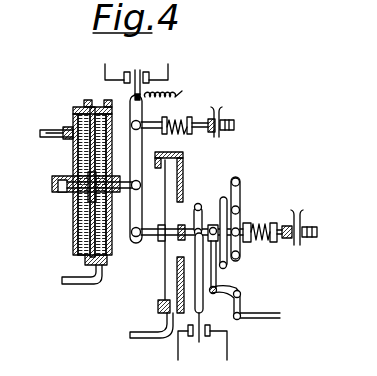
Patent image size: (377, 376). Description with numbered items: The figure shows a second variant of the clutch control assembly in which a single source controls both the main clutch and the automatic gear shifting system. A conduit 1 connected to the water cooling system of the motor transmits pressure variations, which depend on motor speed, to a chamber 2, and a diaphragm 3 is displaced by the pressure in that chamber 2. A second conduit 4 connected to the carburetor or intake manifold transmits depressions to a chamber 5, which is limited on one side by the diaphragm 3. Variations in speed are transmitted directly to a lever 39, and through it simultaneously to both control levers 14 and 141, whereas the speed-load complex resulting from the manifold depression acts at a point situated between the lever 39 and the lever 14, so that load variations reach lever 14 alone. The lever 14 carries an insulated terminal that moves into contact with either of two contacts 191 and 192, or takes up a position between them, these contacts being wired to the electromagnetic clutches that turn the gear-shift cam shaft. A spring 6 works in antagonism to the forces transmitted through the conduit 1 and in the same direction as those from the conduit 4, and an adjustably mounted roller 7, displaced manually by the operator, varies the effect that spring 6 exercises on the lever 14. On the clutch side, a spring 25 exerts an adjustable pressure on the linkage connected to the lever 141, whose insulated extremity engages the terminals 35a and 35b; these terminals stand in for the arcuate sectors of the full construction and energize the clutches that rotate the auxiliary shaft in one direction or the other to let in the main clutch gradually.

The conduit 1 is at (75, 277).
The chamber 2 is at (88, 245).
The diaphragm 3 is at (80, 210).
The conduit 4 is at (150, 322).
The chamber 5 is at (167, 282).
The spring 6 is at (261, 226).
The adjustably mounted roller 7 is at (215, 206).
The lever 14 is at (200, 276).
The lever 141 is at (135, 142).
The contact 191 is at (220, 343).
The contact 192 is at (186, 335).
The spring 25 is at (178, 117).
The terminal 35a is at (147, 75).
The terminal 35b is at (126, 75).
The lever 39 is at (133, 243).